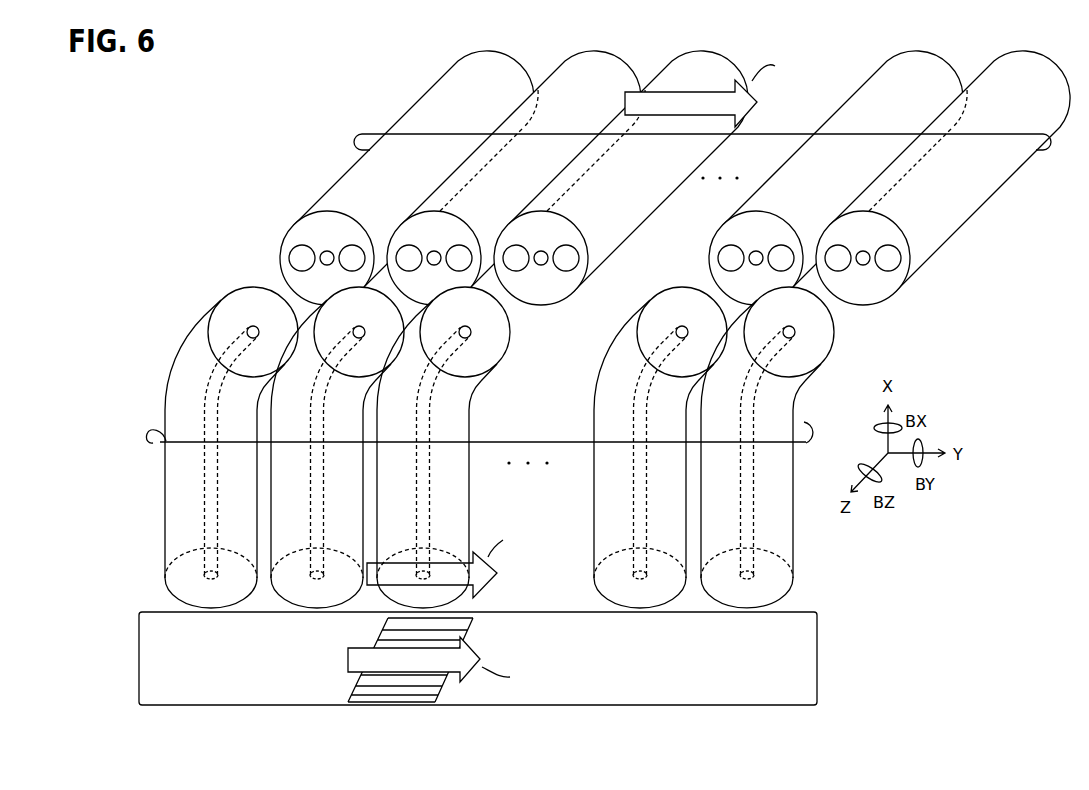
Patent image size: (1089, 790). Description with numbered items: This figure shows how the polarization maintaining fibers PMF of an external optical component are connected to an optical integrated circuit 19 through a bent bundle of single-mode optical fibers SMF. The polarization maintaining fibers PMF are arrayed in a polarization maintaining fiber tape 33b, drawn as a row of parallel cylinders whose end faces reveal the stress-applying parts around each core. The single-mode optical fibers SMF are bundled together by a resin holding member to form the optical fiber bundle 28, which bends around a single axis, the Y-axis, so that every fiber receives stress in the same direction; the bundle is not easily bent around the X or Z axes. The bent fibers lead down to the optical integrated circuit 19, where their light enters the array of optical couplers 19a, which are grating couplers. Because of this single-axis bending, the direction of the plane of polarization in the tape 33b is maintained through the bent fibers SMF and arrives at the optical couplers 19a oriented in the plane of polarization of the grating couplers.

The polarization maintaining fiber tape 33b is at (352, 133).
The optical fiber bundle 28 is at (152, 443).
The optical integrated circuit 19 is at (818, 648).
The optical couplers 19a is at (468, 624).
The polarization maintaining fibers PMF is at (675, 178).
The single-mode optical fibers SMF is at (499, 447).